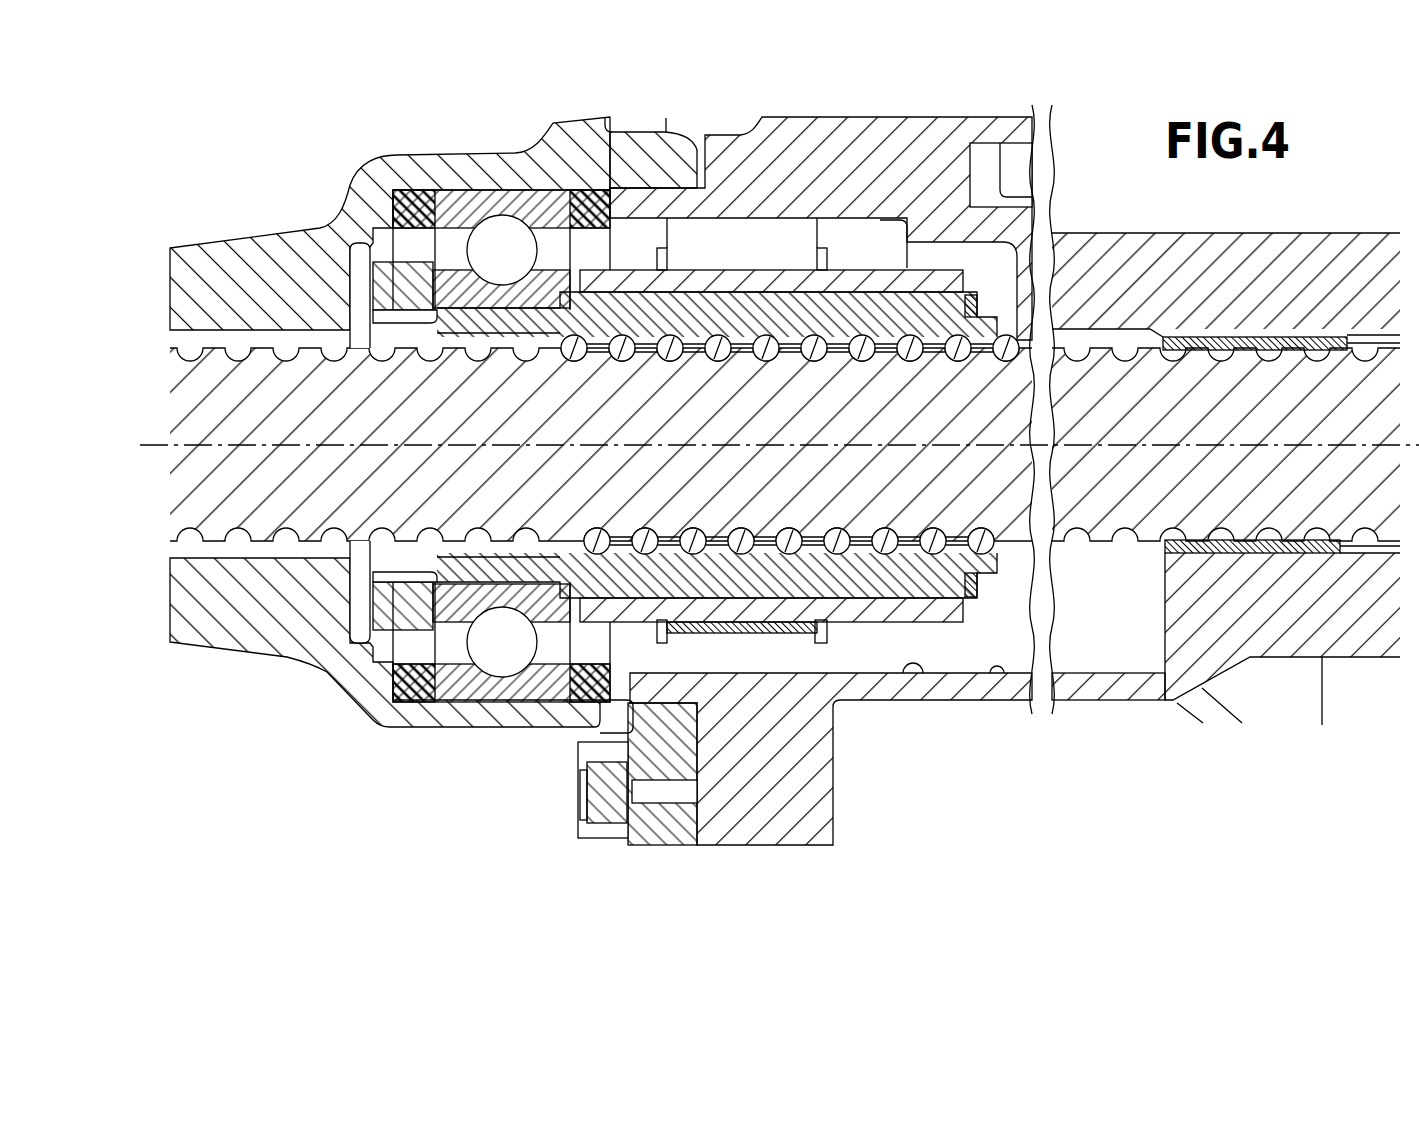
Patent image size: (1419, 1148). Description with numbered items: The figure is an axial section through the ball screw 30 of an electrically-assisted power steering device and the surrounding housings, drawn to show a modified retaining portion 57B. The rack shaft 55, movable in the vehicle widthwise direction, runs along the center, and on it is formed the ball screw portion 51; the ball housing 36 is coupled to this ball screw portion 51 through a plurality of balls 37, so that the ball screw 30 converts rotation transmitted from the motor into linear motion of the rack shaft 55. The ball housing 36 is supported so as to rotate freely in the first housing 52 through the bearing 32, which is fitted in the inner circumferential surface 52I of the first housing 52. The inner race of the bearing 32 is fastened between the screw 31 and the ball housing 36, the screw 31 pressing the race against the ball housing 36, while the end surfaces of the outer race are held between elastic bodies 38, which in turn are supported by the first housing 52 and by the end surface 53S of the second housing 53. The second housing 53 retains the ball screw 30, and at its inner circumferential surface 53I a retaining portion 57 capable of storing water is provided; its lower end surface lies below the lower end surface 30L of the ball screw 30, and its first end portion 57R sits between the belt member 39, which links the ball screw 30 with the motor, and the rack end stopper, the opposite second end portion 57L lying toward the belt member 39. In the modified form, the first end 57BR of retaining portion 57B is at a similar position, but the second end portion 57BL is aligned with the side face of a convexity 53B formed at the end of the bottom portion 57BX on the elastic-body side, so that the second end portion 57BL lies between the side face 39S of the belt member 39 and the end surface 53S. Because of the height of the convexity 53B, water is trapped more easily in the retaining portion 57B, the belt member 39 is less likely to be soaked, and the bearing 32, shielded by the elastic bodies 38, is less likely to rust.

The ball screw 30 is at (641, 531).
The lower end surface of the ball screw 30L is at (822, 580).
The screw 31 is at (360, 243).
The bearing 32 is at (491, 422).
The ball housing 36 is at (500, 625).
The balls 37 is at (420, 630).
The elastic bodies 38 is at (405, 190).
The belt member 39 is at (773, 635).
The side face of the belt member 39S is at (602, 770).
The ball screw portion 51 is at (265, 541).
The first housing 52 is at (652, 780).
The inner circumferential surface of the first housing 52I is at (490, 205).
The second housing 53 is at (737, 812).
The convexity 53B is at (615, 705).
The inner circumferential surface of the second housing 53I is at (913, 673).
The end surface of the second housing 53S is at (590, 188).
The rack shaft 55 is at (232, 330).
The retaining portion 57 is at (1005, 481).
The retaining portion (modified example) 57B is at (940, 655).
The bottom portion of the retaining portion 57BX is at (997, 673).
The second end portion of the retaining portion 57L is at (730, 829).
The second end portion of retaining portion 57B 57BL is at (665, 760).
The first end portion of the retaining portion 57R is at (1226, 558).
The first end portion of retaining portion 57B 57BR is at (1160, 620).